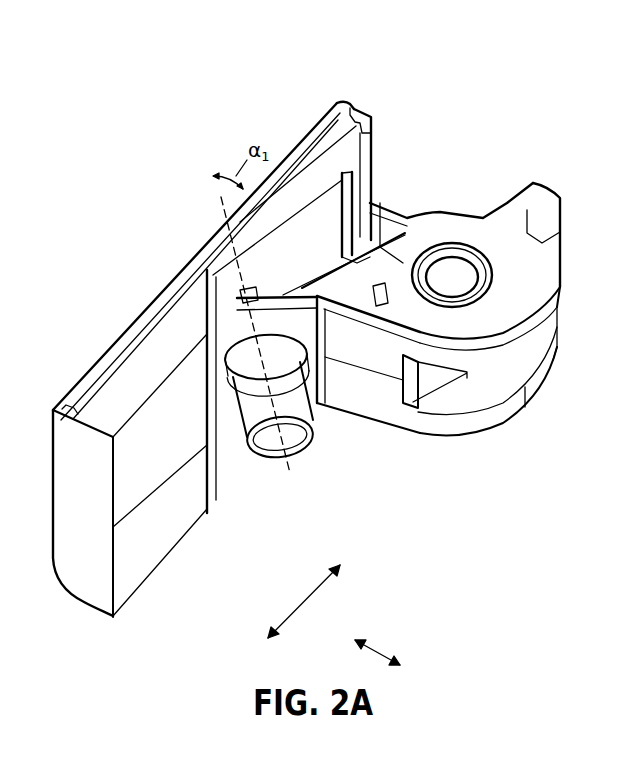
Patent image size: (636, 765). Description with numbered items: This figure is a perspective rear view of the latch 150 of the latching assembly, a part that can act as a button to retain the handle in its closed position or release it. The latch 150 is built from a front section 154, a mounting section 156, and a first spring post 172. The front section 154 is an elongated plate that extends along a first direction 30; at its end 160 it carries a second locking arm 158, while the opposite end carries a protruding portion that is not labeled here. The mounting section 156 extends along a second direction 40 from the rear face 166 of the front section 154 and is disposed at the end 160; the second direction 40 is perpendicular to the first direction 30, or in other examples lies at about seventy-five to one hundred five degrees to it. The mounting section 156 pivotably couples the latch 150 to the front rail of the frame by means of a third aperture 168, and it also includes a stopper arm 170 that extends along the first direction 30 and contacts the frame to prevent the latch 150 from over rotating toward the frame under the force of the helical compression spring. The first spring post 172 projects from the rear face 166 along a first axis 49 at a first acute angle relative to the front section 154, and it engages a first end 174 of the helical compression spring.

The latch 150 is at (129, 69).
The front section 154 is at (194, 250).
The end 160 is at (357, 104).
The second locking arm 158 is at (378, 137).
The rear face 166 is at (362, 182).
The third aperture 168 is at (440, 267).
The stopper arm 170 is at (538, 196).
The mounting section 156 is at (532, 264).
The first end 174 is at (635, 372).
The first spring post 172 is at (309, 407).
The first axis 49 is at (221, 197).
The first direction 30 is at (306, 599).
The second direction 40 is at (378, 648).